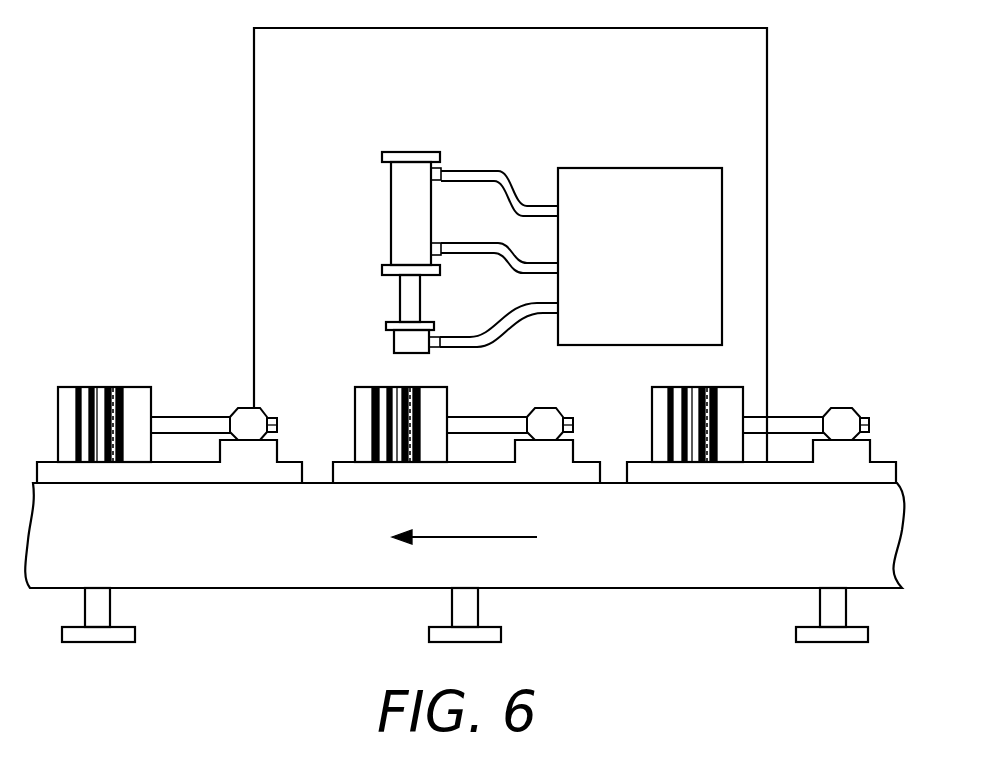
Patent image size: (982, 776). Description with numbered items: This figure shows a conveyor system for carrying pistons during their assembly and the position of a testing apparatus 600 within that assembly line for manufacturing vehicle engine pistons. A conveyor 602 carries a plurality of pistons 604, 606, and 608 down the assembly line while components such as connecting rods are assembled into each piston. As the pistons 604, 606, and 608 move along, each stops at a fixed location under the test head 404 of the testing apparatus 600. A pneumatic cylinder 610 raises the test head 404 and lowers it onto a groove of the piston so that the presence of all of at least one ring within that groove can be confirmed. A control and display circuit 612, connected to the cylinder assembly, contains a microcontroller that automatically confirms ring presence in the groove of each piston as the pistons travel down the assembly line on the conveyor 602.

The testing apparatus 600 is at (604, 102).
The conveyor 602 is at (680, 568).
The piston 604 is at (97, 387).
The piston 606 is at (362, 387).
The piston 608 is at (733, 387).
The pneumatic cylinder 610 is at (400, 208).
The test head 404 is at (384, 318).
The control and display circuit 612 is at (685, 160).